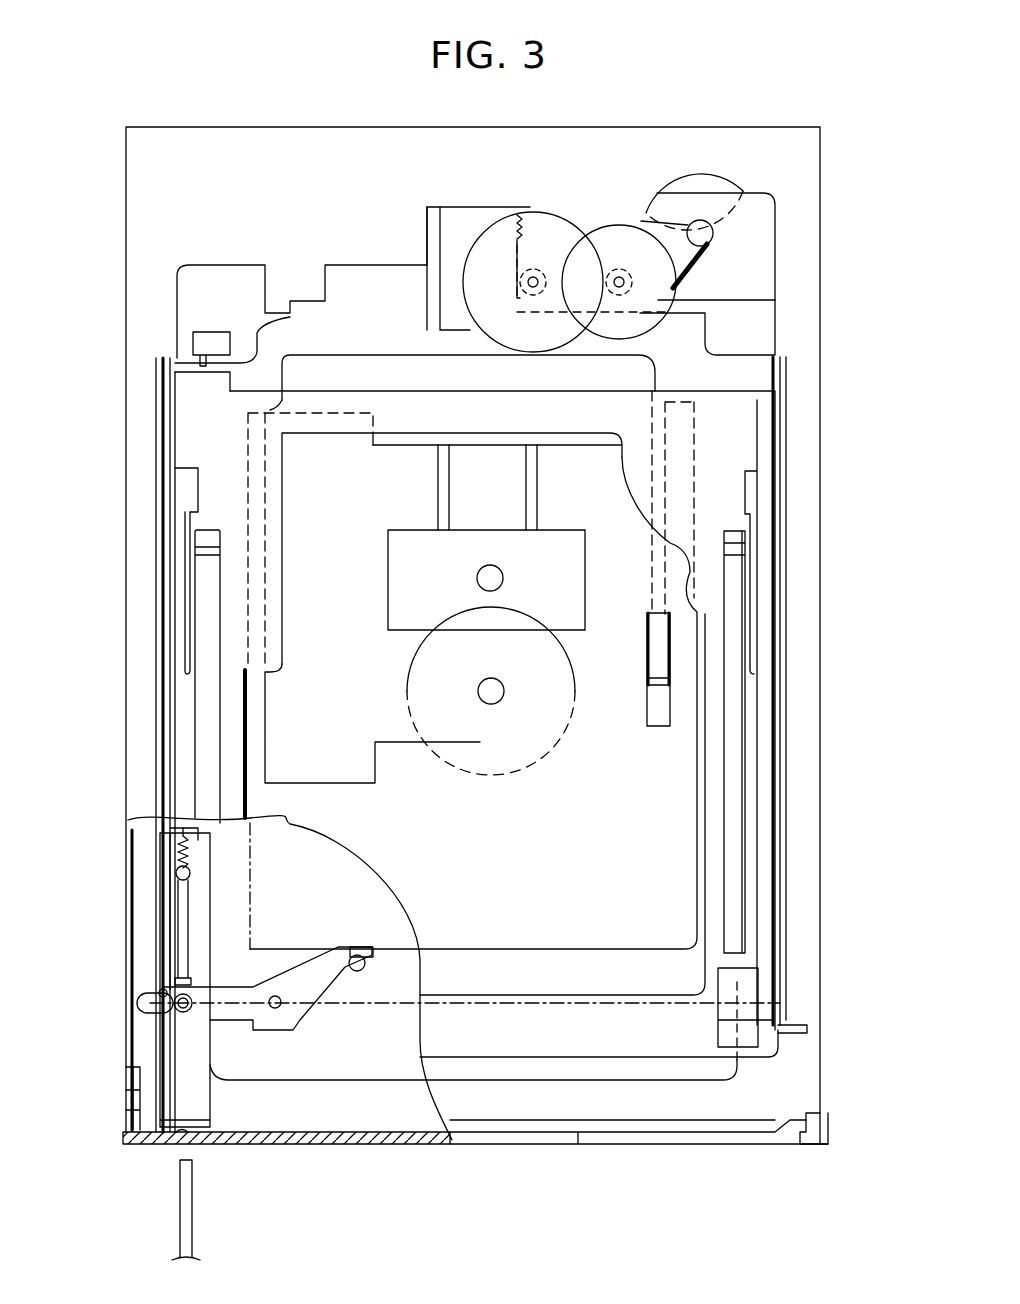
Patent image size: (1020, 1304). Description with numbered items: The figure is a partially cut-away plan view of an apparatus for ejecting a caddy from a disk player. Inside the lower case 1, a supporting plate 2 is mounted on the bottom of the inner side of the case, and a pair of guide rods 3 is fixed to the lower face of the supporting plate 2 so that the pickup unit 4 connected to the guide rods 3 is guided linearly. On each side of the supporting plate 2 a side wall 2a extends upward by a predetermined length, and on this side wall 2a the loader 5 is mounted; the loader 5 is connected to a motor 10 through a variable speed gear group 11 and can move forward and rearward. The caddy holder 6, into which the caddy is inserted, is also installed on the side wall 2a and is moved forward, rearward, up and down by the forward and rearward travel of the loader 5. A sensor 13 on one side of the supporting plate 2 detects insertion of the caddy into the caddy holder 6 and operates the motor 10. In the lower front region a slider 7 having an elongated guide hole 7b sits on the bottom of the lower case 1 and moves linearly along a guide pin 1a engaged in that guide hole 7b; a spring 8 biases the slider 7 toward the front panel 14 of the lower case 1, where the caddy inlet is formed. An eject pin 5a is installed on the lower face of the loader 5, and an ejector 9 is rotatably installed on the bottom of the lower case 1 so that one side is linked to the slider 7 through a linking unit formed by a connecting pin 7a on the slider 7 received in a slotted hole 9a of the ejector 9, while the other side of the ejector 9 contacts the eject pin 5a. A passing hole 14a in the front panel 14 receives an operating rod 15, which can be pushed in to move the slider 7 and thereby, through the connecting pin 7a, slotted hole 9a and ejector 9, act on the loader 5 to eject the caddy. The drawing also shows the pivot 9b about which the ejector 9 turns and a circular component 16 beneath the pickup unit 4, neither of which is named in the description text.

The lower case 1 is at (135, 232).
The guide pin 1a is at (176, 873).
The supporting plate 2 is at (175, 318).
The side wall 2a is at (152, 410).
The guide rods 3 is at (531, 492).
The pickup unit 4 is at (485, 522).
The loader 5 is at (760, 378).
The eject pin 5a is at (348, 958).
The caddy holder 6 is at (760, 752).
The slider 7 is at (173, 1055).
The connecting pin 7a is at (160, 992).
The elongated guide hole 7b is at (180, 922).
The spring 8 is at (172, 840).
The ejector 9 is at (230, 1015).
The slotted hole 9a is at (140, 1002).
The pivot 9b is at (373, 960).
The motor 10 is at (706, 185).
The variable speed gear group 11 is at (610, 230).
The sensor 13 is at (213, 335).
The front panel 14 is at (147, 1138).
The passing hole 14a is at (180, 1146).
The operating rod 15 is at (190, 1228).
The turntable motor 16 is at (553, 692).